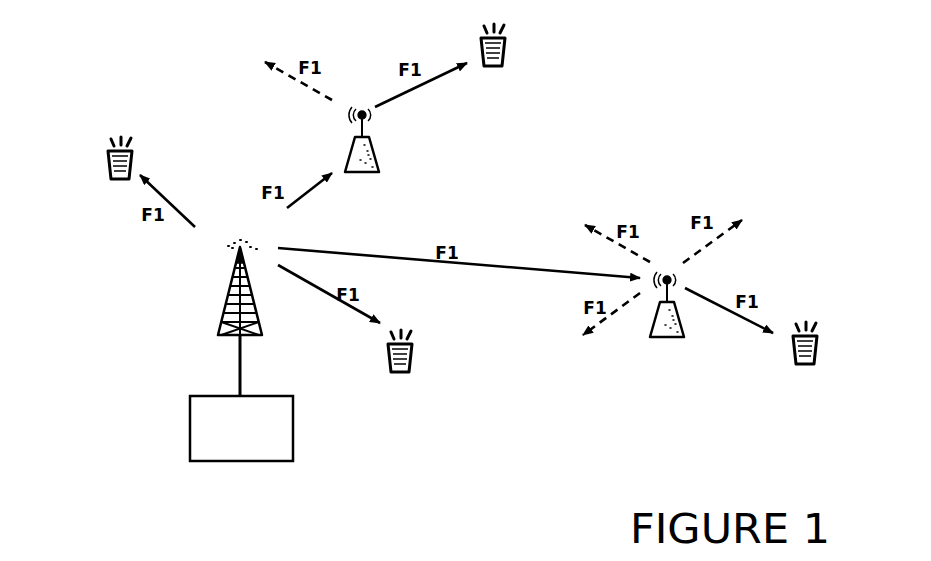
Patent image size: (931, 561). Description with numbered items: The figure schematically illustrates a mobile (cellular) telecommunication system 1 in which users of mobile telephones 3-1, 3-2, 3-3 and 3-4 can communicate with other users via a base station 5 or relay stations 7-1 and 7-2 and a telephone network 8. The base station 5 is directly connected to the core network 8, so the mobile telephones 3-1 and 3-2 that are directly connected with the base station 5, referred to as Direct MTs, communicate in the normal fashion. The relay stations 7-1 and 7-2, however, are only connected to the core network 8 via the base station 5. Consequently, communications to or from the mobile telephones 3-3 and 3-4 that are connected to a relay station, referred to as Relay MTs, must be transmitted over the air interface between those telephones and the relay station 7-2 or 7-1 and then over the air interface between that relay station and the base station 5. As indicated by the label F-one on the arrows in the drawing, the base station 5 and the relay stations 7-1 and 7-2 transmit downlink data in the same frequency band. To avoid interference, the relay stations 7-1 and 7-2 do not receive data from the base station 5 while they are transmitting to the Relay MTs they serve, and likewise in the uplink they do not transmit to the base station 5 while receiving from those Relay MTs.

The mobile telecommunication system 1 is at (470, 420).
The mobile telephone 3-1 is at (387, 357).
The mobile telephone 3-2 is at (105, 162).
The mobile telephone 3-3 is at (520, 53).
The mobile telephone 3-4 is at (790, 360).
The base station 5 is at (223, 302).
The relay station 7-1 is at (645, 327).
The relay station 7-2 is at (377, 145).
The core network 8 is at (190, 427).